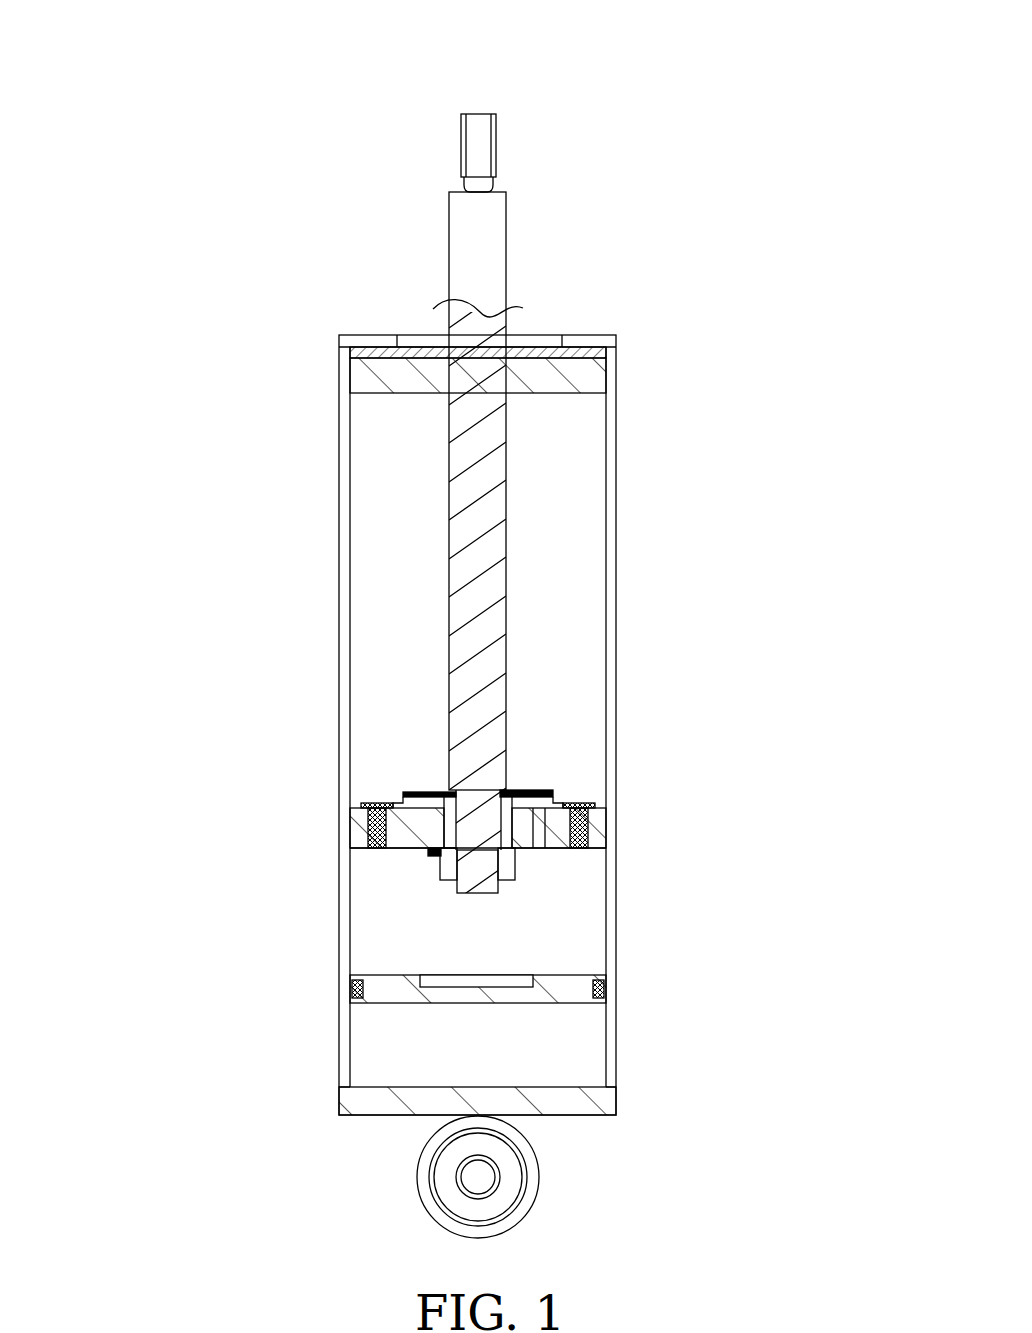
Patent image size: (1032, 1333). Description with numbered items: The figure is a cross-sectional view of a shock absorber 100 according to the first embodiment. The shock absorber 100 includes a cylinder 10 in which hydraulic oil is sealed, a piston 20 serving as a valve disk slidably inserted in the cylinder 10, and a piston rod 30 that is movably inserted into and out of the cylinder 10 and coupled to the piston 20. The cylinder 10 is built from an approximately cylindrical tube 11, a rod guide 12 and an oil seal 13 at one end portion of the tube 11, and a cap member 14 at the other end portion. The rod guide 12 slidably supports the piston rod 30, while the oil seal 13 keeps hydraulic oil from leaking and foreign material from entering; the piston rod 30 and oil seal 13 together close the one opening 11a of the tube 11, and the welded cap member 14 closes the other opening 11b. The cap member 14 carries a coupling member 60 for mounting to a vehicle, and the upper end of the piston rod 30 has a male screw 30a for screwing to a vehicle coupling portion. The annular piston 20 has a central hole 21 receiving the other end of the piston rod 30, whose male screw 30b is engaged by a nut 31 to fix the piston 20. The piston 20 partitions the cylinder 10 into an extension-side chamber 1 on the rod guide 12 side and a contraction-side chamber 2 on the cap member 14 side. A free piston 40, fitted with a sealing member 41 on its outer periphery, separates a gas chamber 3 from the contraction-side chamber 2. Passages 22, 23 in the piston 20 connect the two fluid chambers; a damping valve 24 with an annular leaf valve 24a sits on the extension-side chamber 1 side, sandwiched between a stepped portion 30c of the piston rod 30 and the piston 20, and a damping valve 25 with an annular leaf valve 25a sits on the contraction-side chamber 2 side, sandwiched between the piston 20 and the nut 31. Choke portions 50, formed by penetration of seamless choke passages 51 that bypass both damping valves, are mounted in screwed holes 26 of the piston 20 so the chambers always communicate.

The shock absorber 100 is at (334, 108).
The extension-side chamber 1 is at (365, 672).
The contraction-side chamber 2 is at (365, 960).
The gas chamber 3 is at (368, 1036).
The cylinder 10 is at (334, 333).
The tube 11 is at (345, 558).
The one opening 11a is at (398, 346).
The other opening 11b is at (346, 1100).
The rod guide 12 is at (352, 385).
The oil seal 13 is at (352, 357).
The cap member 14 is at (341, 1100).
The piston 20 is at (362, 828).
The hole 21 is at (440, 794).
The passage 22 is at (514, 852).
The passage 23 is at (444, 808).
The damping valve 24 is at (542, 782).
The annular leaf valve 24a is at (556, 796).
The damping valve 25 is at (440, 852).
The annular leaf valve 25a is at (430, 866).
The hole 26 is at (372, 849).
The piston rod 30 is at (465, 258).
The male screw 30a is at (462, 137).
The male screw 30b is at (507, 888).
The stepped portion 30c is at (530, 818).
The nut 31 is at (517, 868).
The free piston 40 is at (548, 993).
The sealing member 41 is at (602, 990).
The choke portion 50 is at (365, 806).
The choke passage 51 is at (378, 826).
The coupling member 60 is at (505, 1185).